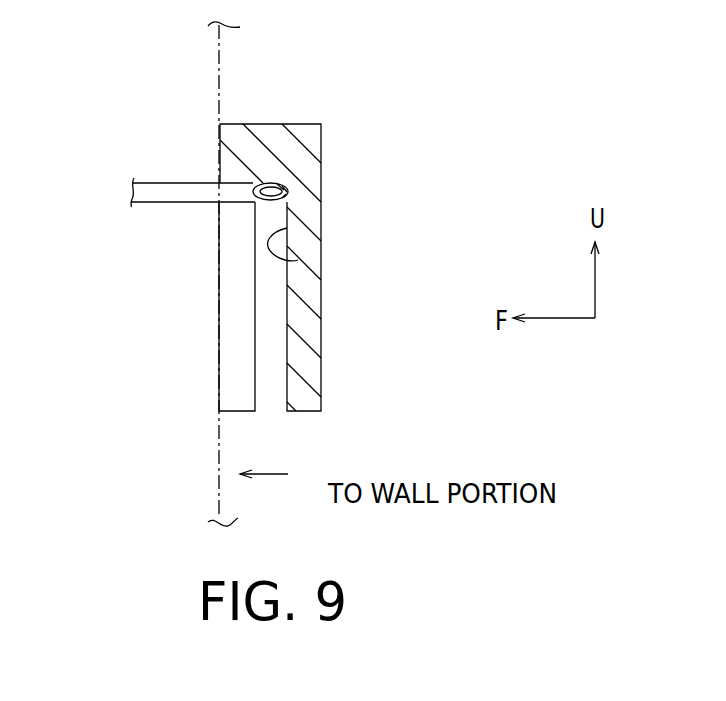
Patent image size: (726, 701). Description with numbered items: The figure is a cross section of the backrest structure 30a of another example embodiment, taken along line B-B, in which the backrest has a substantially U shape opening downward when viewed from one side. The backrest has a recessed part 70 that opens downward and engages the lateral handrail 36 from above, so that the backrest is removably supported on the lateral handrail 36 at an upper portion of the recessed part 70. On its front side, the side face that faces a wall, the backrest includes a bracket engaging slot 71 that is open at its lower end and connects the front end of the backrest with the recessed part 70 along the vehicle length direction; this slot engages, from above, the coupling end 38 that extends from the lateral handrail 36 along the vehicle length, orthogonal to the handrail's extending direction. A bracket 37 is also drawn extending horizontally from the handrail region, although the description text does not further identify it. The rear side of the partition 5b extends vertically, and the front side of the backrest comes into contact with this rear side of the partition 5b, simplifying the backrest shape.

The partition 5b is at (223, 72).
The backrest structure 30a is at (322, 152).
The lateral handrail 36 is at (276, 184).
The bracket arm 37 is at (169, 183).
The coupling end 38 is at (235, 193).
The recessed part 70 is at (298, 260).
The bracket engaging slot 71 is at (232, 288).